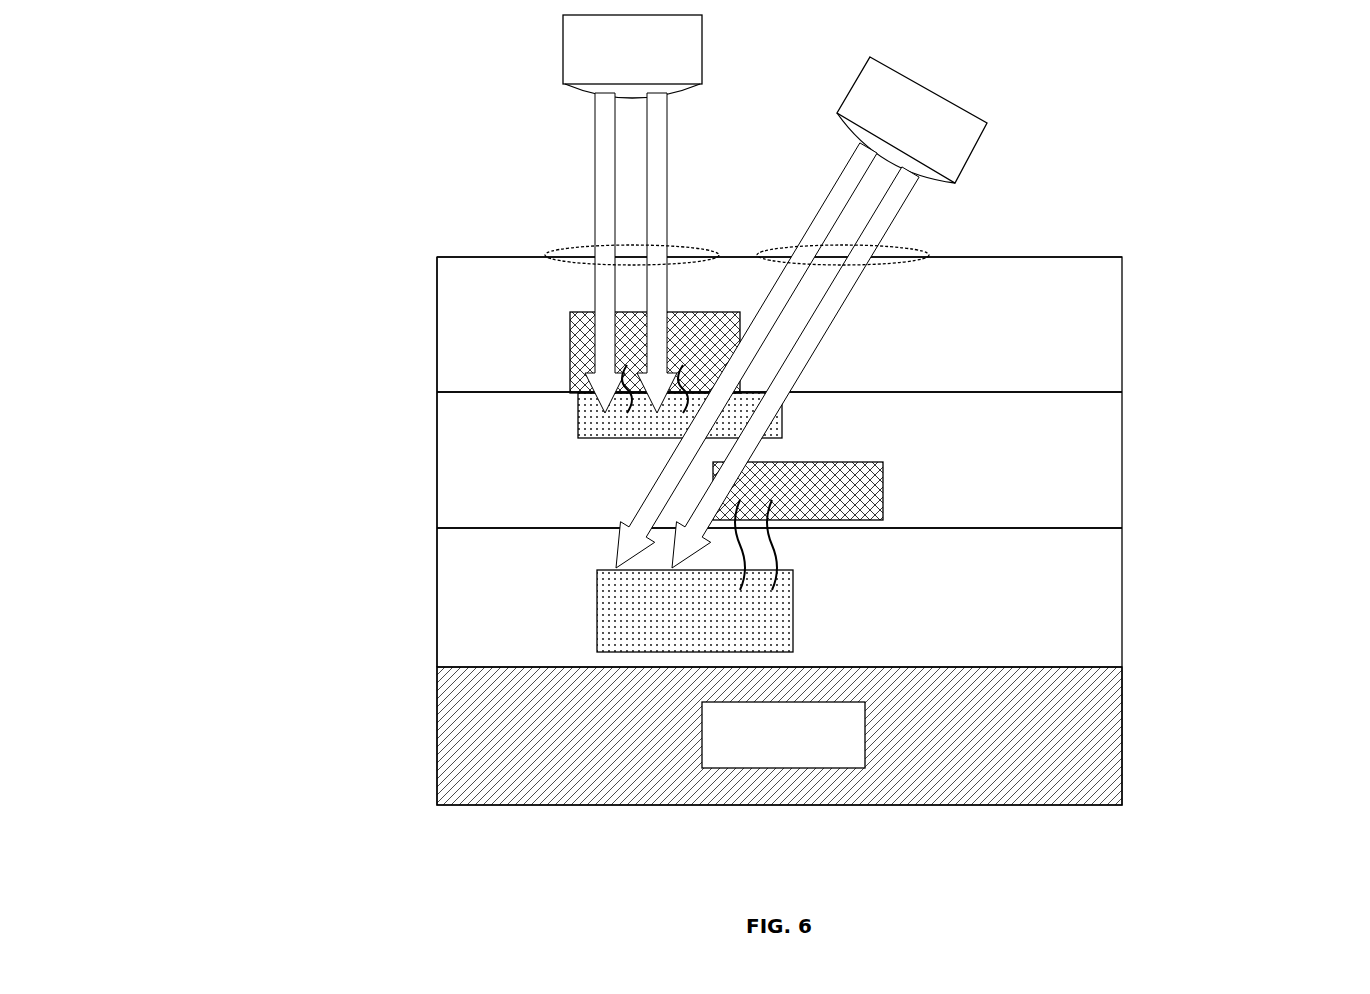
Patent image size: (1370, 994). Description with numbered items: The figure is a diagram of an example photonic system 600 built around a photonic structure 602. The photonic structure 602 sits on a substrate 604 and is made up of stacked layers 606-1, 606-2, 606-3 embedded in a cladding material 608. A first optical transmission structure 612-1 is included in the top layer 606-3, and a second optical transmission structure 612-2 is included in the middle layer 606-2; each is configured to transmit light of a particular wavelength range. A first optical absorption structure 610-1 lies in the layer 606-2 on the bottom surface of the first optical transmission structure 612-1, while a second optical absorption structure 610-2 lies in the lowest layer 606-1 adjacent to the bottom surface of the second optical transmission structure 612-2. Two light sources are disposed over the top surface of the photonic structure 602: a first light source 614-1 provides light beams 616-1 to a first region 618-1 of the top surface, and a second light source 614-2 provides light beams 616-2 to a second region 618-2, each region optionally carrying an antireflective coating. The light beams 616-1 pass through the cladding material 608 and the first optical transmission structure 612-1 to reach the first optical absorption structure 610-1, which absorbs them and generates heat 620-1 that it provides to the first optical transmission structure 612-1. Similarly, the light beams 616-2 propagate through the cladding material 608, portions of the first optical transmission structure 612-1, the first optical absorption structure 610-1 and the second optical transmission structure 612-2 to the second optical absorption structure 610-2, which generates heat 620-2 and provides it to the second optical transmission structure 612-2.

The photonic system 600 is at (297, 48).
The photonic structure 602 is at (407, 258).
The substrate 604 is at (779, 736).
The layer 606-1 is at (415, 608).
The layer 606-2 is at (415, 460).
The layer 606-3 is at (415, 323).
The cladding material 608 is at (495, 570).
The first optical absorption structure 610-1 is at (782, 425).
The second optical absorption structure 610-2 is at (763, 617).
The first optical transmission structure 612-1 is at (693, 317).
The second optical transmission structure 612-2 is at (865, 497).
The first light source 614-1 is at (627, 43).
The second light source 614-2 is at (940, 138).
The light beams 616-1 is at (650, 187).
The light beams 616-2 is at (823, 230).
The first region 618-1 is at (583, 237).
The second region 618-2 is at (892, 267).
The heat 620-1 is at (627, 413).
The heat 620-2 is at (773, 557).